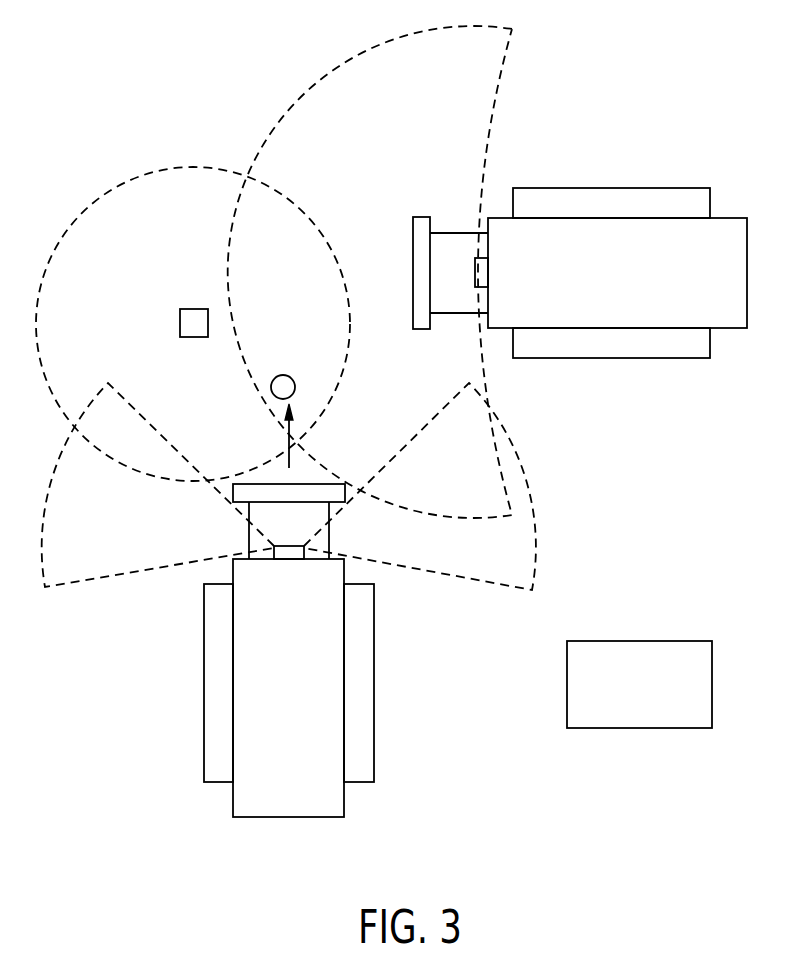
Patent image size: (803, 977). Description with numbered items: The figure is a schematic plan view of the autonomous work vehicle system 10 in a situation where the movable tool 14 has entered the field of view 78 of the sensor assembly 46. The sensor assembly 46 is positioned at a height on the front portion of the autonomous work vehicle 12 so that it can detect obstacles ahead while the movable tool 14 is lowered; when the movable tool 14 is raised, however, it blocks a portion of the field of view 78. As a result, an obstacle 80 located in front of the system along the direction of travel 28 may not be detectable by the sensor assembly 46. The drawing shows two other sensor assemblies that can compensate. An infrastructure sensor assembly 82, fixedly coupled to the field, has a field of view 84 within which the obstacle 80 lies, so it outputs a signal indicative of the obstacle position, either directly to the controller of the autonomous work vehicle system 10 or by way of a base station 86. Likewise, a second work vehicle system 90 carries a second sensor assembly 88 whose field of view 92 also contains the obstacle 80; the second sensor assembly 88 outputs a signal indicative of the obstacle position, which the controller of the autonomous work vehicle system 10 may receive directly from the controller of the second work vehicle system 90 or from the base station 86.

The autonomous work vehicle system 10 is at (183, 645).
The autonomous work vehicle 12 is at (345, 575).
The movable tool 14 is at (328, 483).
The direction of travel 28 is at (288, 447).
The sensor assembly 46 is at (290, 561).
The field of view 78 is at (52, 478).
The obstacle 80 is at (292, 378).
The infrastructure sensor assembly 82 is at (180, 322).
The field of view of the infrastructure sensor assembly 84 is at (82, 212).
The base station 86 is at (638, 641).
The second sensor assembly 88 is at (490, 272).
The second work vehicle system 90 is at (578, 170).
The field of view of the second sensor assembly 92 is at (318, 82).